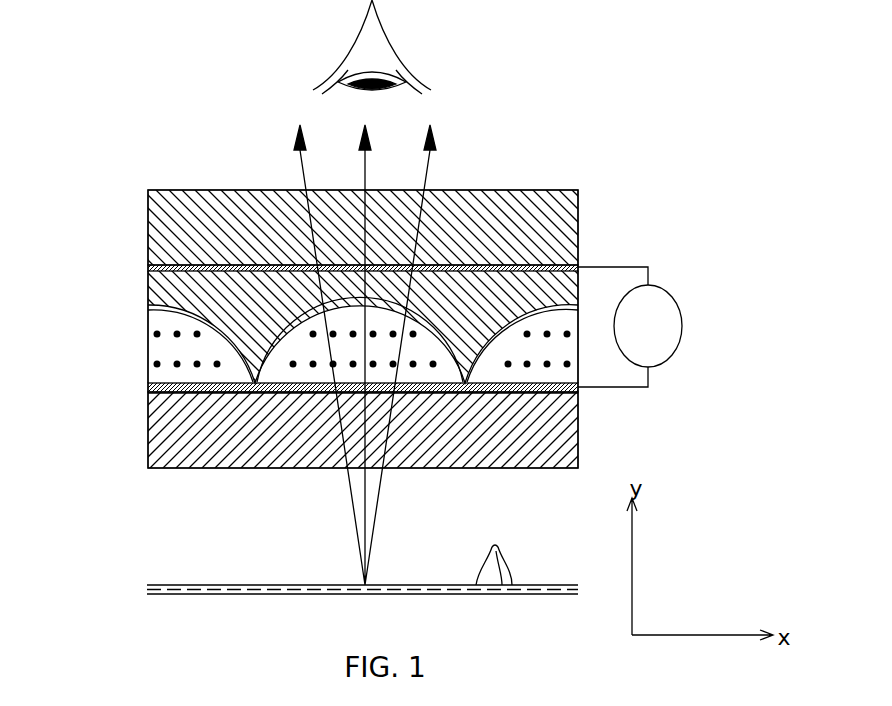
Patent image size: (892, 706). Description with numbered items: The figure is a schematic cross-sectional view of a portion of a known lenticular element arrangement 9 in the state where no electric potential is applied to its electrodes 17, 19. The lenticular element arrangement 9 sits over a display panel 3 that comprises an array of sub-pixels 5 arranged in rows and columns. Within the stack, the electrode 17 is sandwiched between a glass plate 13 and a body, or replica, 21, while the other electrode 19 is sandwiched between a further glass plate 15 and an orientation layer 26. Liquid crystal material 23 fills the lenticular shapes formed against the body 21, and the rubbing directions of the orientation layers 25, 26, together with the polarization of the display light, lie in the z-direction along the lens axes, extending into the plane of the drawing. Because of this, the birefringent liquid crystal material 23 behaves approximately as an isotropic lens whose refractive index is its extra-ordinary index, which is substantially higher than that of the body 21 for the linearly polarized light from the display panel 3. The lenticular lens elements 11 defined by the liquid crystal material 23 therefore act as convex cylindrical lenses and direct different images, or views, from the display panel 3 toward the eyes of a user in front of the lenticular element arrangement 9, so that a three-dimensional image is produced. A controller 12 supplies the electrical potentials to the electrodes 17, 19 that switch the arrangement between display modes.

The display panel 3 is at (537, 594).
The sub-pixels 5 is at (494, 549).
The lenticular element arrangement 9 is at (555, 127).
The lenticular lens elements 11 is at (515, 320).
The controller 12 is at (683, 325).
The glass plate 13 is at (578, 210).
The further glass plate 15 is at (566, 447).
The electrode 17 is at (578, 248).
The electrode 19 is at (178, 394).
The body or replica 21 is at (148, 284).
The liquid crystal material 23 is at (150, 353).
The orientation layer 25 is at (150, 313).
The orientation layer 26 is at (148, 388).